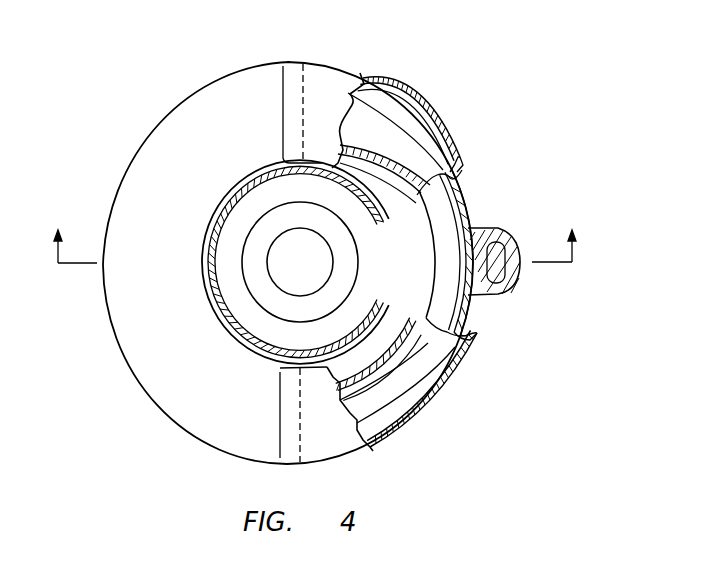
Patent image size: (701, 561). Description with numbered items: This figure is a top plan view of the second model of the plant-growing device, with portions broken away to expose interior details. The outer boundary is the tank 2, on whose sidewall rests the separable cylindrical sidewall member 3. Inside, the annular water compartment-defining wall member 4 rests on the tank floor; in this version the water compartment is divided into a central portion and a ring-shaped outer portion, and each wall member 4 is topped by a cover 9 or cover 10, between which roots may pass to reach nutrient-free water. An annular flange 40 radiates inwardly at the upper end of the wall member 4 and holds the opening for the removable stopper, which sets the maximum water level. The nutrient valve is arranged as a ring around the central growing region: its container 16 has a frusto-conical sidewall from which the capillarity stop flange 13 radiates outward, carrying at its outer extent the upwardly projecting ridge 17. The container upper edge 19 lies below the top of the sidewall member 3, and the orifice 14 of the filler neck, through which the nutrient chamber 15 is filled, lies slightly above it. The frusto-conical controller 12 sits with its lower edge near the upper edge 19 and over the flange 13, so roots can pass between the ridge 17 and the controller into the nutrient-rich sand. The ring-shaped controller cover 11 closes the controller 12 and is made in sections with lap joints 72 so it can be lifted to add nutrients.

The tank 2 is at (462, 188).
The sidewall member 3 is at (505, 237).
The water compartment-defining wall member 4 is at (352, 251).
The cover 9 is at (318, 273).
The cover 10 is at (440, 242).
The controller cover 11 is at (326, 77).
The controller 12 is at (423, 206).
The capillarity stop flange 13 is at (250, 184).
The orifice 14 is at (403, 131).
The nutrient chamber 15 is at (436, 142).
The container 16 is at (370, 86).
The ridge 17 is at (350, 182).
The upper edge 19 is at (350, 146).
The flange 40 is at (510, 288).
The lap joints 72 is at (293, 72).